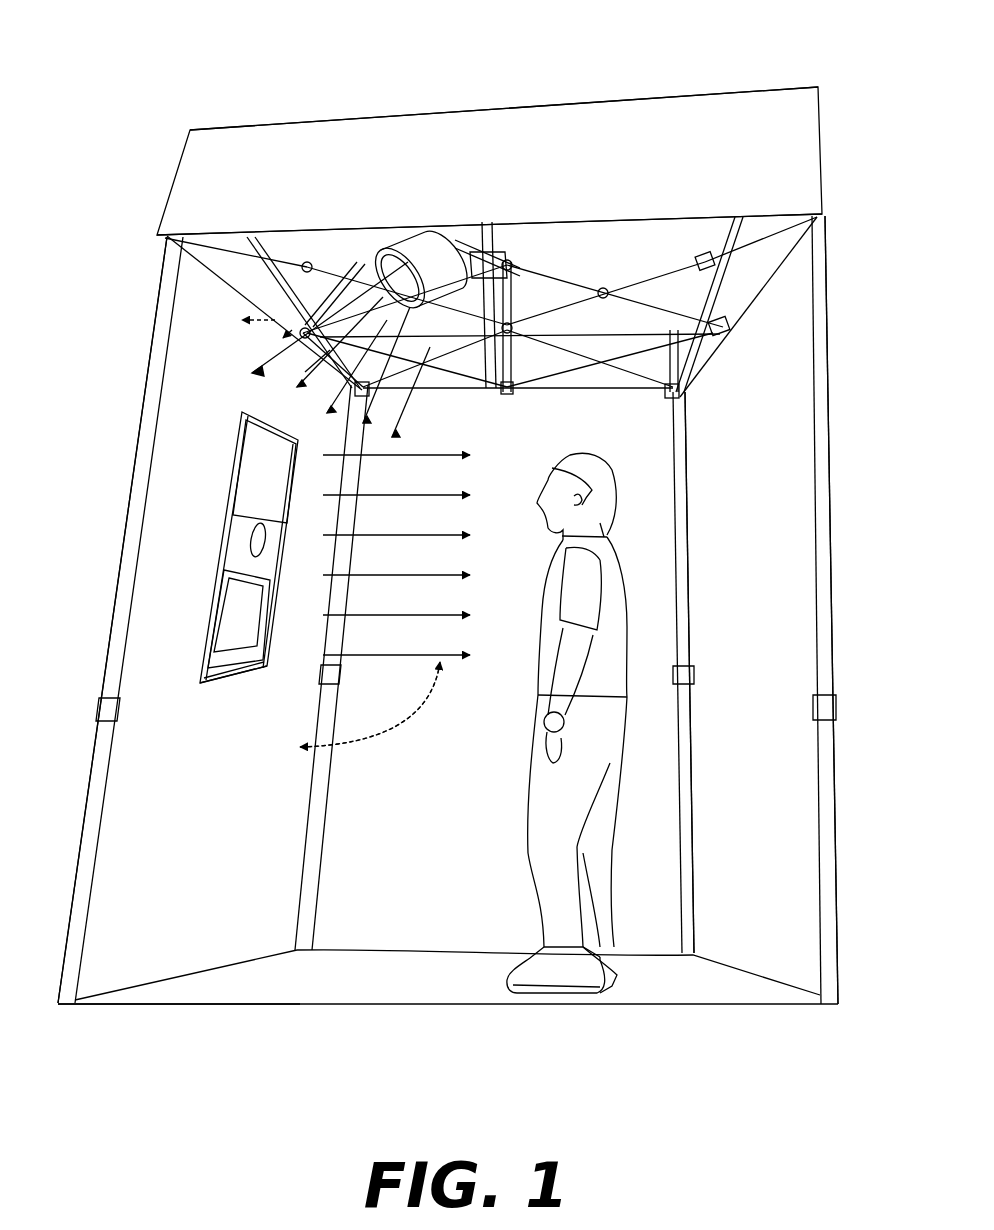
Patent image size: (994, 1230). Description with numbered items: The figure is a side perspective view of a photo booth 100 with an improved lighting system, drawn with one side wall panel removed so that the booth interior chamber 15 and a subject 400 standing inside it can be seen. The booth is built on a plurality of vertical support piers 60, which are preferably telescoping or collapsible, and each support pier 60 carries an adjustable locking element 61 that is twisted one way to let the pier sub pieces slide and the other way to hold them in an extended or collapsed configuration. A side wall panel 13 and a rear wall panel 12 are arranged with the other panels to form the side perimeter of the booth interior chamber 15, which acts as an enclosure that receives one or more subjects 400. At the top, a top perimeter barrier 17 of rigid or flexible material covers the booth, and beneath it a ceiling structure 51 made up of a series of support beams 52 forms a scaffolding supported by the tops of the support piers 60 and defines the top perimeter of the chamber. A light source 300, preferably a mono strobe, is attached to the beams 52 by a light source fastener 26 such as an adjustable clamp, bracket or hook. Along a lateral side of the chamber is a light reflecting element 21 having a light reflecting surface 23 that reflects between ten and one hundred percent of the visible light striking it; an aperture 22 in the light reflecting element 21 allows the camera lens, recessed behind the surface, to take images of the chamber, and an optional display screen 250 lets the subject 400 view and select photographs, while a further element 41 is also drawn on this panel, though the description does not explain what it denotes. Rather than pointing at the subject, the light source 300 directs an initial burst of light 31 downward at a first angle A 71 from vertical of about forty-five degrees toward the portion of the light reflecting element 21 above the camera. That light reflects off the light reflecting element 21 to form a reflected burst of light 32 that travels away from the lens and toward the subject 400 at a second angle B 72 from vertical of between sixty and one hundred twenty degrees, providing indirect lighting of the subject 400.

The photo booth 100 is at (155, 62).
The top perimeter barrier 17 is at (568, 142).
The vertical support piers 60 is at (122, 595).
The adjustable locking element 61 is at (105, 703).
The side wall panel 13 is at (452, 905).
The light reflecting surface 23 is at (187, 888).
The light reflecting element 21 is at (175, 570).
The rear wall panel 12 is at (775, 565).
The booth interior chamber 15 is at (730, 445).
The display screen 250 is at (255, 483).
The door handle 41 is at (248, 542).
The aperture 22 is at (200, 683).
The ceiling structure 51 is at (612, 290).
The support beams 52 is at (552, 268).
The light source 300 is at (428, 262).
The light source fastener 26 is at (478, 250).
The first angle A 71 is at (287, 323).
The initial burst of light 31 is at (300, 377).
The reflected burst of light 32 is at (468, 495).
The second angle B 72 is at (387, 733).
The subject 400 is at (573, 920).